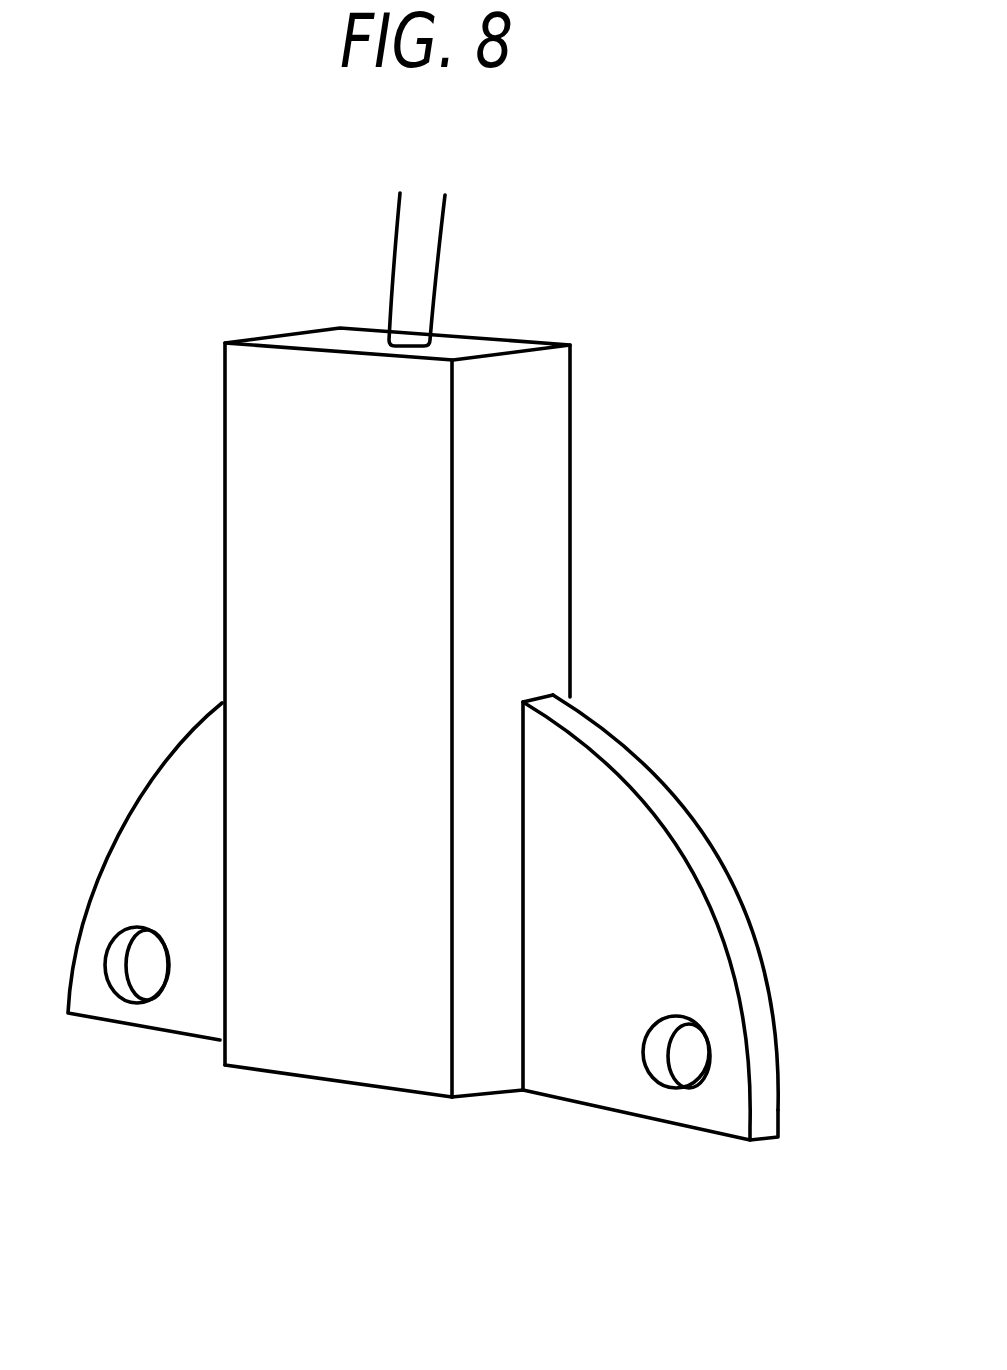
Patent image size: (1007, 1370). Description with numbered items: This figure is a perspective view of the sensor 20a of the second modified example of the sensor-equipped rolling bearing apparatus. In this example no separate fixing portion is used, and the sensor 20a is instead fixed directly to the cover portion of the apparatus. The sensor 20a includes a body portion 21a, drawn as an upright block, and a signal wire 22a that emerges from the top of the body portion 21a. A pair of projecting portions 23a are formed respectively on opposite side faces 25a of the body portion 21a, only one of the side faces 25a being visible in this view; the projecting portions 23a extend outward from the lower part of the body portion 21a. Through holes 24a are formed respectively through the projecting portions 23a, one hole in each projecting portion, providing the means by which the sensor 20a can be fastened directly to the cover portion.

The sensor 20a is at (640, 291).
The body portion 21a is at (305, 343).
The signal wire 22a is at (405, 280).
The projecting portions 23a is at (167, 810).
The through holes 24a is at (122, 985).
The side faces 25a is at (528, 517).